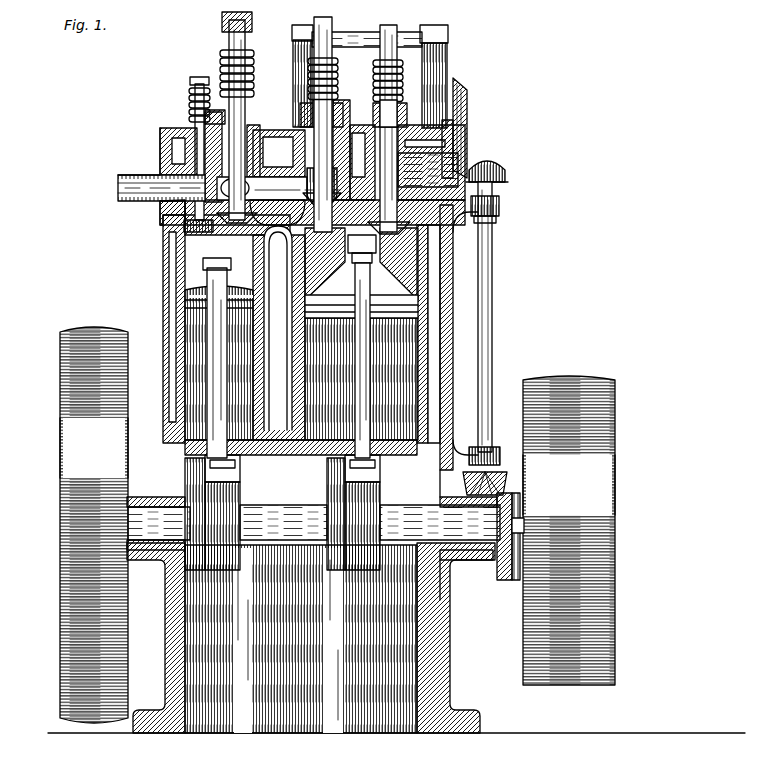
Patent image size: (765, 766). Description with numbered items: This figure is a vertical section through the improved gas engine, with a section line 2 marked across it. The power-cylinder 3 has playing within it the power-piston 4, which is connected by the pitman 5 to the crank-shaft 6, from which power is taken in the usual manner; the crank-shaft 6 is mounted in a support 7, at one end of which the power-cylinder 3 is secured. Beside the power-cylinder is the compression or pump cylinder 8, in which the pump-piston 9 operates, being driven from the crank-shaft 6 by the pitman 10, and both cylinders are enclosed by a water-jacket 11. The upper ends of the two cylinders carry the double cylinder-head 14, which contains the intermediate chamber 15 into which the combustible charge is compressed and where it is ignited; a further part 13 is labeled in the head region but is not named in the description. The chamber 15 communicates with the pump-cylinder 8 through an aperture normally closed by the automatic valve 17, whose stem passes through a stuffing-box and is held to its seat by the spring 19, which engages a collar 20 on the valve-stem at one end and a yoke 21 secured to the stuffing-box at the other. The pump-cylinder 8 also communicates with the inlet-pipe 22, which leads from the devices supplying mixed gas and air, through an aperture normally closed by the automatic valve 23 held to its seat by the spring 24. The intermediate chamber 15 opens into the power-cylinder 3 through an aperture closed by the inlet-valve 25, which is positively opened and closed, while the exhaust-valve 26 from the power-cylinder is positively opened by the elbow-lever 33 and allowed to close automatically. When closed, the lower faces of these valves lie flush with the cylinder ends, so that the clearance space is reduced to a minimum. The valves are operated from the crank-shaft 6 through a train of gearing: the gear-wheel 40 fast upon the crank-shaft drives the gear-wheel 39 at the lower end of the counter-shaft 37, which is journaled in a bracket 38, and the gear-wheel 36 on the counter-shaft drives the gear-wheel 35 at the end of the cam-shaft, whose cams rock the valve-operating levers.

The section line 2 is at (205, 190).
The power-cylinder 3 is at (402, 343).
The power-piston 4 is at (450, 264).
The pitman 5 is at (362, 382).
The crank-shaft 6 is at (470, 532).
The support 7 is at (442, 653).
The compression or pump cylinder 8 is at (197, 313).
The pump-piston 9 is at (185, 258).
The pitman 10 is at (217, 360).
The water-jacket 11 is at (173, 280).
The valve stem 13 is at (193, 110).
The double cylinder-head 14 is at (166, 147).
The intermediate chamber 15 is at (308, 117).
The automatic valve 17 is at (263, 178).
The spring 19 is at (230, 78).
The collar 20 is at (226, 85).
The yoke 21 is at (221, 88).
The inlet-pipe 22 is at (133, 177).
The automatic valve 23 is at (157, 217).
The spring 24 is at (215, 117).
The inlet-valve 25 is at (306, 194).
The exhaust-valve 26 is at (472, 143).
The elbow-lever 33 is at (502, 453).
The gear-wheel 35 is at (472, 100).
The gear-wheel 36 is at (500, 161).
The counter-shaft 37 is at (489, 235).
The bracket 38 is at (500, 197).
The gear-wheel 39 is at (507, 482).
The gear-wheel 40 is at (525, 532).